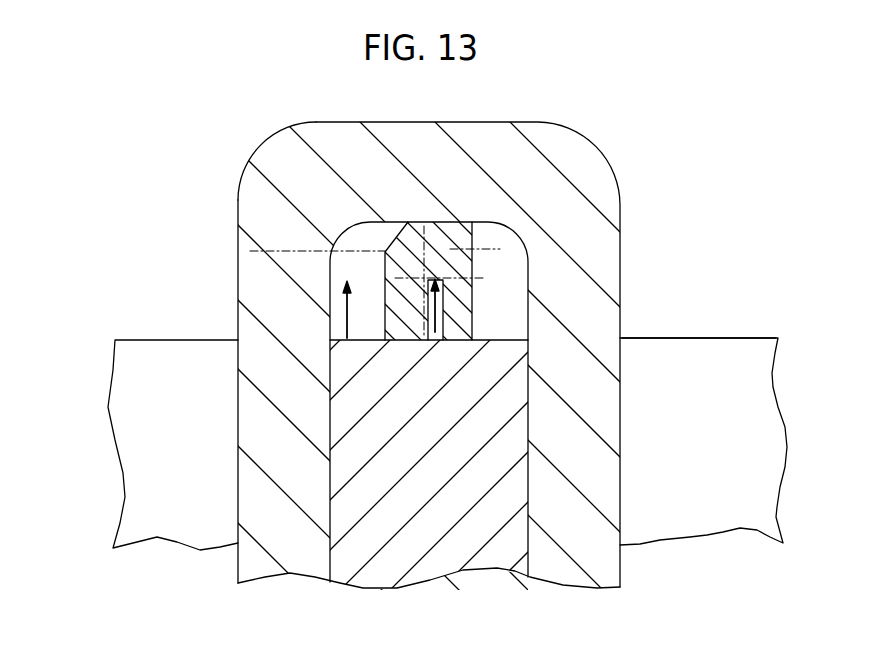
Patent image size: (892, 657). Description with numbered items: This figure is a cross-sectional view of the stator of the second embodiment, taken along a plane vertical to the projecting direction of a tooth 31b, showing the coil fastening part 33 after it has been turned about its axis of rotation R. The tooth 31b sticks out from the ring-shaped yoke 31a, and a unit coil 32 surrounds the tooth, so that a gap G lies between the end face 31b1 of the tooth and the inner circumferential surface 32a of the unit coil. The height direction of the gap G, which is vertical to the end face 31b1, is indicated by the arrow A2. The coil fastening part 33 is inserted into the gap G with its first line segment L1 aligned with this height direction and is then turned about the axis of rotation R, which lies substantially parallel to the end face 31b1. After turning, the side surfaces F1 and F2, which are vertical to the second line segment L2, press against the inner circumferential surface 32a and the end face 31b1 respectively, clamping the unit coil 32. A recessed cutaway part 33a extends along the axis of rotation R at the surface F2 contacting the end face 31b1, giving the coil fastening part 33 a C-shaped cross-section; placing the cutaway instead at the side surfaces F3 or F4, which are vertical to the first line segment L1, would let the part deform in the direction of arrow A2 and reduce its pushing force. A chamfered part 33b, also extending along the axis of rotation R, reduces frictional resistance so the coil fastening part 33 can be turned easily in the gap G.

The unit coil 32 is at (407, 120).
The inner circumferential surface of the unit coil 32a is at (281, 150).
The coil fastening part 33 is at (465, 222).
The recessed cutaway part 33a is at (433, 342).
The chamfered part 33b is at (397, 222).
The yoke 31a is at (705, 339).
The tooth 31b is at (427, 587).
The end face of the tooth 31b1 is at (113, 402).
The side surface F1 is at (442, 222).
The side surface F2 is at (113, 400).
The side surface F3 is at (387, 268).
The side surface F4 is at (480, 272).
The first line segment L1 is at (473, 270).
The second line segment L2 is at (455, 257).
The arrow indicating the height direction of the gap A2 is at (340, 331).
The gap G is at (518, 330).
The axis of rotation R is at (268, 256).